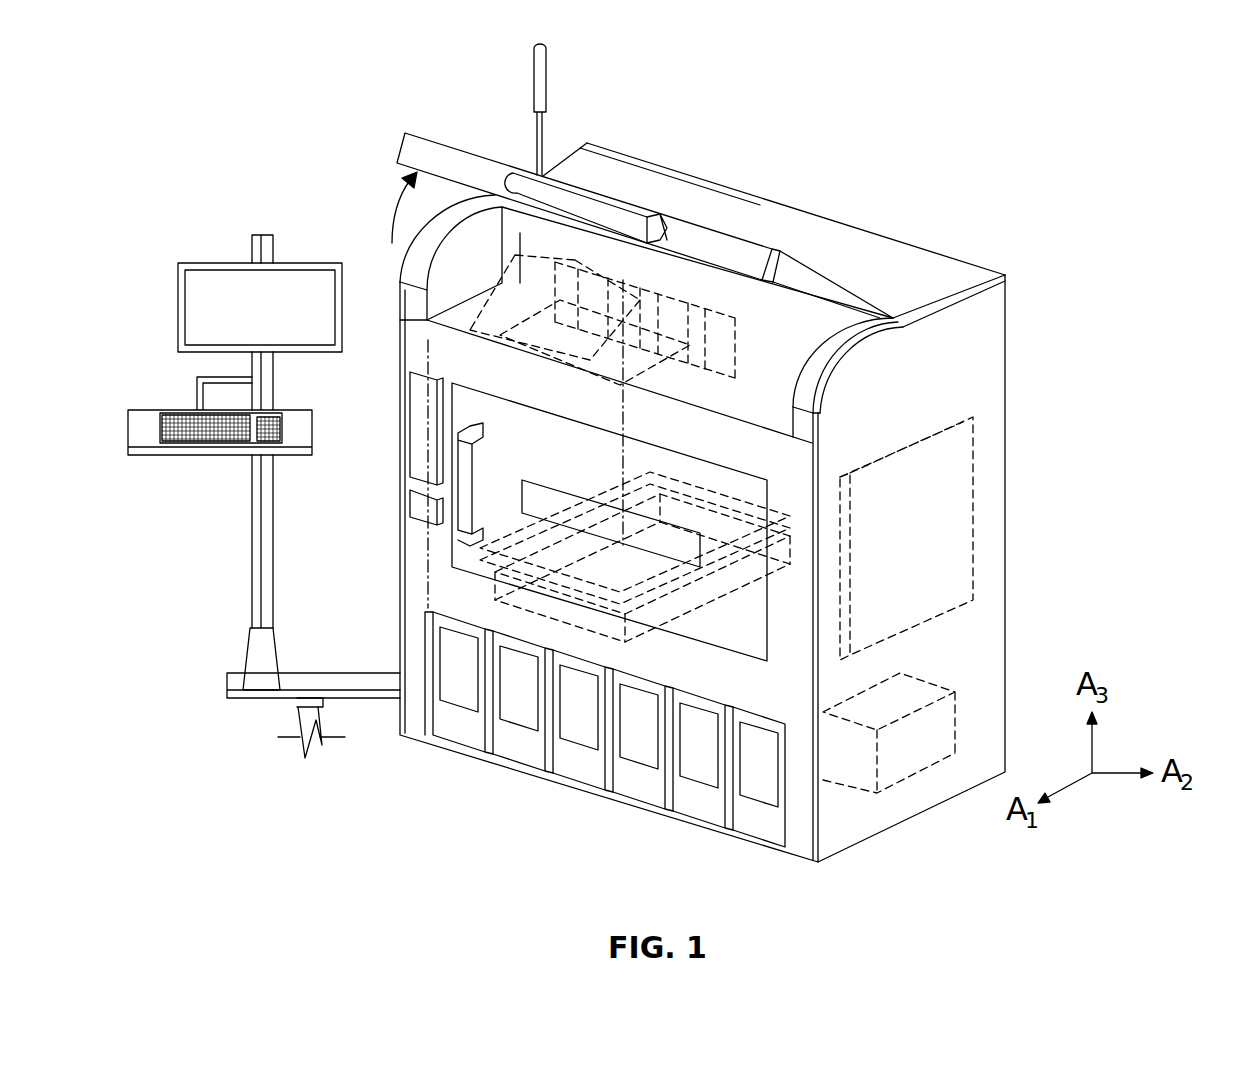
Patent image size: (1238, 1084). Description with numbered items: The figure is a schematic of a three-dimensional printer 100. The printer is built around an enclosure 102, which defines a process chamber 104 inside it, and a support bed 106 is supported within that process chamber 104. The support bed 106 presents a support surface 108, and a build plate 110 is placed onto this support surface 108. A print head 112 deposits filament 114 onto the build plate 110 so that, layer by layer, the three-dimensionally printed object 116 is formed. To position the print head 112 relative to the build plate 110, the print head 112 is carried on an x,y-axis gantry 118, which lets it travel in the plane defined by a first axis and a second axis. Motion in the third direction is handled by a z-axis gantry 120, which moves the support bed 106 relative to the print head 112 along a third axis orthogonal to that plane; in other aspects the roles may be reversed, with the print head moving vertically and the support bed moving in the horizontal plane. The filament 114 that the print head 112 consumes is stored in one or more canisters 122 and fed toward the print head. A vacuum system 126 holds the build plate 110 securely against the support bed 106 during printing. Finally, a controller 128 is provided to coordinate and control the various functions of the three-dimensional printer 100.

The three-dimensional printer 100 is at (240, 74).
The enclosure 102 is at (752, 486).
The process chamber 104 is at (847, 318).
The support bed 106 is at (767, 650).
The support surface 108 is at (848, 495).
The build plate 110 is at (750, 620).
The print head 112 is at (680, 342).
The filament 114 is at (427, 550).
The three-dimensionally printed object 116 is at (640, 590).
The x,y-axis gantry 118 is at (513, 327).
The z-axis gantry 120 is at (905, 540).
The canisters 122 is at (760, 830).
The vacuum system 126 is at (910, 740).
The controller 128 is at (193, 392).